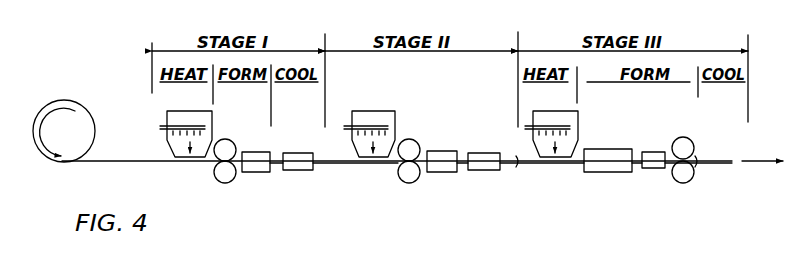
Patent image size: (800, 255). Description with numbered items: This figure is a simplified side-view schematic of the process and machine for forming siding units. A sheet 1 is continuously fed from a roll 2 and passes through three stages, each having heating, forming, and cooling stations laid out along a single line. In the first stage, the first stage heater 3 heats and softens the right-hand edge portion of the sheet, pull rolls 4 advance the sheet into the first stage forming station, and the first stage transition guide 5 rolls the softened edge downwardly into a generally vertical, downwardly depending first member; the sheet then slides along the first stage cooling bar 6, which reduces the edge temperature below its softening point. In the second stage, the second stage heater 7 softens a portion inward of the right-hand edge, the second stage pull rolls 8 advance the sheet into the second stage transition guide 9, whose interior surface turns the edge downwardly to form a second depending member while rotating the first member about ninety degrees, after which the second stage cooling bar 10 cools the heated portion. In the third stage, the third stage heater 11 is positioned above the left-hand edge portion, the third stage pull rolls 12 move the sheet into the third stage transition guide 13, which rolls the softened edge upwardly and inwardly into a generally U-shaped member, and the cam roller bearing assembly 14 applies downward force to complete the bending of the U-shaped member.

The sheet 1 is at (99, 163).
The roll 2 is at (31, 135).
The first stage heater 3 is at (178, 111).
The pull rolls 4 is at (223, 183).
The first stage transition guide 5 is at (254, 172).
The first stage cooling bar 6 is at (293, 172).
The second stage heater 7 is at (385, 109).
The second stage pull rolls 8 is at (404, 184).
The second stage transition guide 9 is at (437, 172).
The second stage cooling bar 10 is at (478, 170).
The third stage heater 11 is at (561, 110).
The third stage pull rolls 12 is at (677, 137).
The third stage transition guide 13 is at (593, 149).
The cam roller bearing assembly 14 is at (648, 151).